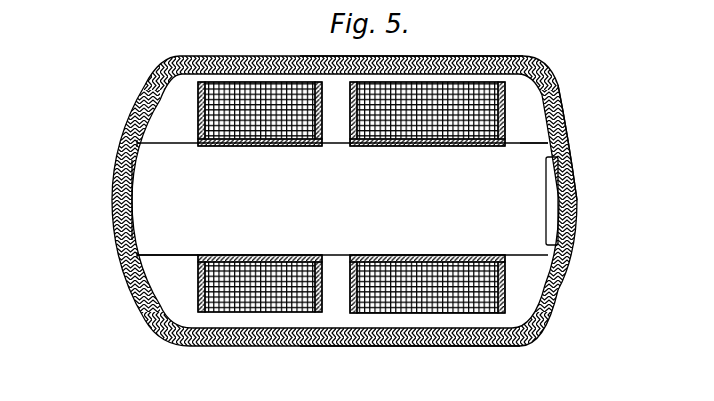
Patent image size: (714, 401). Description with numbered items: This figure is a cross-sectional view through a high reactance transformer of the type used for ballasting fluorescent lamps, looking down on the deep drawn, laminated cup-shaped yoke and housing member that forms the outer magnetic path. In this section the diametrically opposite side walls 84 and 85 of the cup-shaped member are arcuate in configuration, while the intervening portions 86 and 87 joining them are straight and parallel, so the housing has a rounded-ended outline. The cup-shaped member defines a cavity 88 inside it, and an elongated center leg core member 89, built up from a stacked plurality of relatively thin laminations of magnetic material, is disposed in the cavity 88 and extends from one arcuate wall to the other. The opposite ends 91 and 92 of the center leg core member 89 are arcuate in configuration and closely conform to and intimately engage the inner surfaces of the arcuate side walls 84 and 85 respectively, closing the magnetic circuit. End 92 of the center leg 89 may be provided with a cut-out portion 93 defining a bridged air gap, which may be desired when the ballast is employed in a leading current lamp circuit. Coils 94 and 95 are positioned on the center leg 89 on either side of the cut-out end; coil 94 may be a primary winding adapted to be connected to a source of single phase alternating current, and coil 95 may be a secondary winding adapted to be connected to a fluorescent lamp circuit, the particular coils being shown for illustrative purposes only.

The side wall 84 is at (130, 108).
The side wall 85 is at (566, 136).
The intervening portion 86 is at (492, 58).
The intervening portion 87 is at (394, 344).
The cavity 88 is at (176, 277).
The center leg core member 89 is at (352, 192).
The end 91 is at (133, 190).
The end 92 is at (546, 150).
The cut-out portion 93 is at (555, 190).
The coil 94 is at (288, 298).
The coil 95 is at (450, 303).